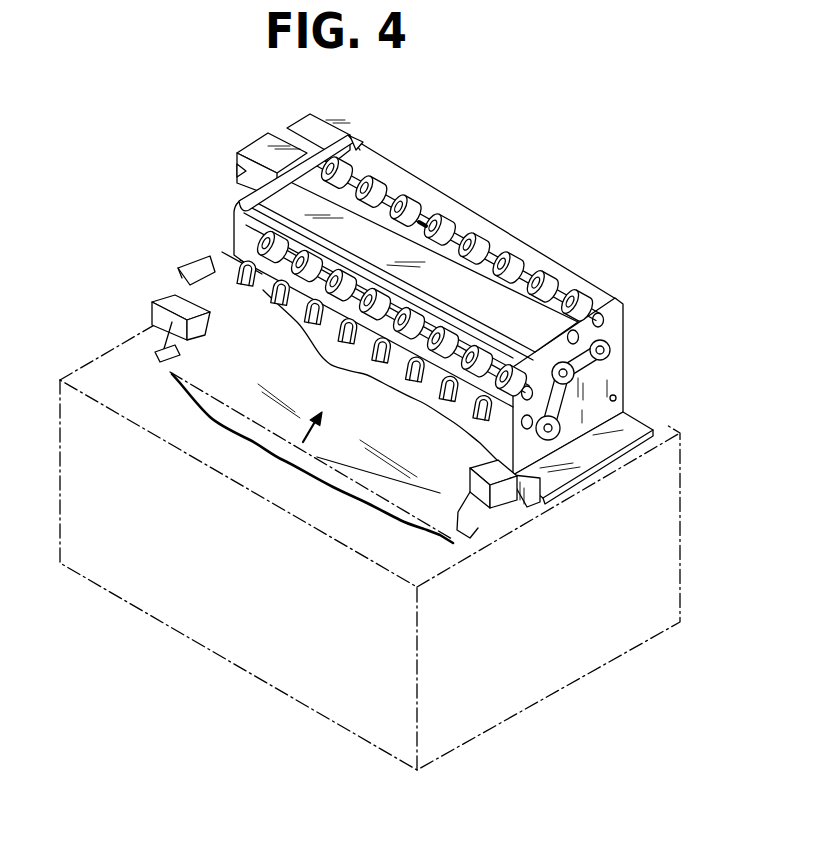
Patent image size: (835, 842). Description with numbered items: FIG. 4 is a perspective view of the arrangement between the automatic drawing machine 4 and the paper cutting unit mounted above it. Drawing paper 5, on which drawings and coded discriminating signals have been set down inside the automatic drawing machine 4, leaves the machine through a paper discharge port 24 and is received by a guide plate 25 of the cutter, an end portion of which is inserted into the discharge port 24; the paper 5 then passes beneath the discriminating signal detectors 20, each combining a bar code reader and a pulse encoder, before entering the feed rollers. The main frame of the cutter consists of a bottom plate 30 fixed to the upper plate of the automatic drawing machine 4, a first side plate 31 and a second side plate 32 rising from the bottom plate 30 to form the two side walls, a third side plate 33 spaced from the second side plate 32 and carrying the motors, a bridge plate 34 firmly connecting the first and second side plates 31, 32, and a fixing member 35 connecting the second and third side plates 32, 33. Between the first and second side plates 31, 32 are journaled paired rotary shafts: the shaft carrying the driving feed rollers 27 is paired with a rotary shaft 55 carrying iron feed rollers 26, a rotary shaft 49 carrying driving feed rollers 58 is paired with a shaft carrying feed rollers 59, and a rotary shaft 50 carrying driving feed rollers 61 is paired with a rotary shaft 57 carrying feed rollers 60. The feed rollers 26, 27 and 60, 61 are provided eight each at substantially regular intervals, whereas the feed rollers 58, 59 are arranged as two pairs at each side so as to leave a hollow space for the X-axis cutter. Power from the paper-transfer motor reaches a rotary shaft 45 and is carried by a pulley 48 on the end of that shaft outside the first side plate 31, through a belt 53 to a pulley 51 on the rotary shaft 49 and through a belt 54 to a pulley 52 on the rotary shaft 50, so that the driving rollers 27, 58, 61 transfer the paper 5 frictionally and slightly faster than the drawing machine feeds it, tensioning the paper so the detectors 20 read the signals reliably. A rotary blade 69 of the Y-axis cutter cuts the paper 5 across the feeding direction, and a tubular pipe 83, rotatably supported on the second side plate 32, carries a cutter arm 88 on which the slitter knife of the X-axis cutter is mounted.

The automatic drawing machine 4 is at (623, 560).
The paper 5 is at (425, 507).
The discriminating signal detectors 20 is at (157, 318).
The paper discharge port 24 is at (317, 457).
The guide plate 25 is at (178, 272).
The feed rollers 26 is at (255, 228).
The feed rollers 27 is at (250, 258).
The bottom plate 30 is at (623, 413).
The first side plate 31 is at (620, 395).
The second side plate 32 is at (365, 175).
The third side plate 33 is at (345, 150).
The bridge plate 34 is at (557, 308).
The fixing member 35 is at (340, 147).
The rotary shaft 45 is at (583, 400).
The pulley 48 is at (587, 398).
The rotary shaft 49 is at (590, 378).
The rotary shaft 50 is at (510, 285).
The pulley 51 is at (608, 360).
The pulley 52 is at (612, 312).
The belt 53 is at (608, 350).
The belt 54 is at (598, 398).
The rotary shaft 55 is at (248, 207).
The rotary shaft 57 is at (537, 272).
The feed rollers 58 is at (427, 225).
The feed rollers 59 is at (395, 218).
The feed rollers 60 is at (482, 262).
The feed rollers 61 is at (625, 402).
The rotary blade 69 is at (230, 262).
The tubular pipe 83 is at (430, 245).
The cutter arm 88 is at (462, 245).